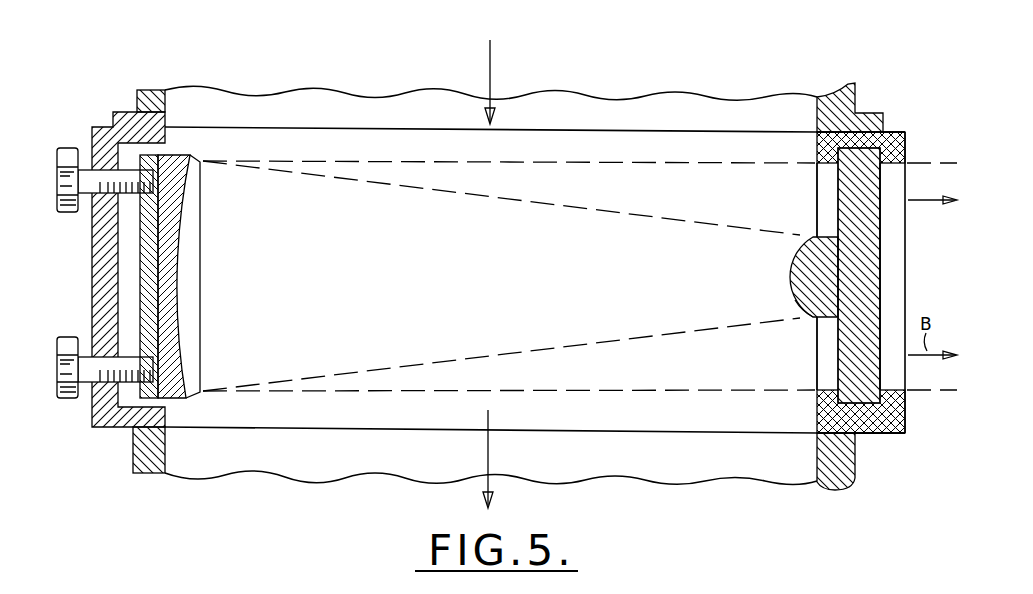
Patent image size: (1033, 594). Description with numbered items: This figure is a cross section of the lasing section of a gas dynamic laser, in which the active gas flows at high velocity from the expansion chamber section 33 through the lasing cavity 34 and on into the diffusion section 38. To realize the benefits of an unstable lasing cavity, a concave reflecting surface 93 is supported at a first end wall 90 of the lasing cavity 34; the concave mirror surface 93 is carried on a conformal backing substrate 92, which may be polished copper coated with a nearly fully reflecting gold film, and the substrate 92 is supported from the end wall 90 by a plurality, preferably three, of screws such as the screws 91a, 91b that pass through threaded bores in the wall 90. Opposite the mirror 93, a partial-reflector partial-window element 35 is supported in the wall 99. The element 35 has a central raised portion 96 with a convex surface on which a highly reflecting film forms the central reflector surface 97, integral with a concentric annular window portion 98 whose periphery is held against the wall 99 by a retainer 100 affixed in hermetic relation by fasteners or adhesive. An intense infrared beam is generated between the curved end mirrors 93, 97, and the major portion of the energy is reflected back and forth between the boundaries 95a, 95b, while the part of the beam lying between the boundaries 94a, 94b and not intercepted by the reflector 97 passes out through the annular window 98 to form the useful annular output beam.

The expansion chamber section 33 is at (775, 107).
The lasing cavity 34 is at (600, 153).
The partial-reflector partial-window element 35 is at (883, 266).
The diffusion section 38 is at (780, 482).
The first end wall 90 is at (92, 134).
The screw 91a is at (67, 212).
The screw 91b is at (68, 399).
The conformal backing substrate 92 is at (185, 152).
The concave reflecting surface 93 is at (181, 228).
The beam boundary 94a is at (557, 164).
The beam boundary 94b is at (583, 390).
The beam boundary 95a is at (660, 220).
The beam boundary 95b is at (730, 322).
The central raised portion 96 is at (795, 263).
The central reflector surface 97 is at (797, 310).
The annular window portion 98 is at (845, 198).
The wall 99 is at (817, 153).
The retainer 100 is at (905, 131).